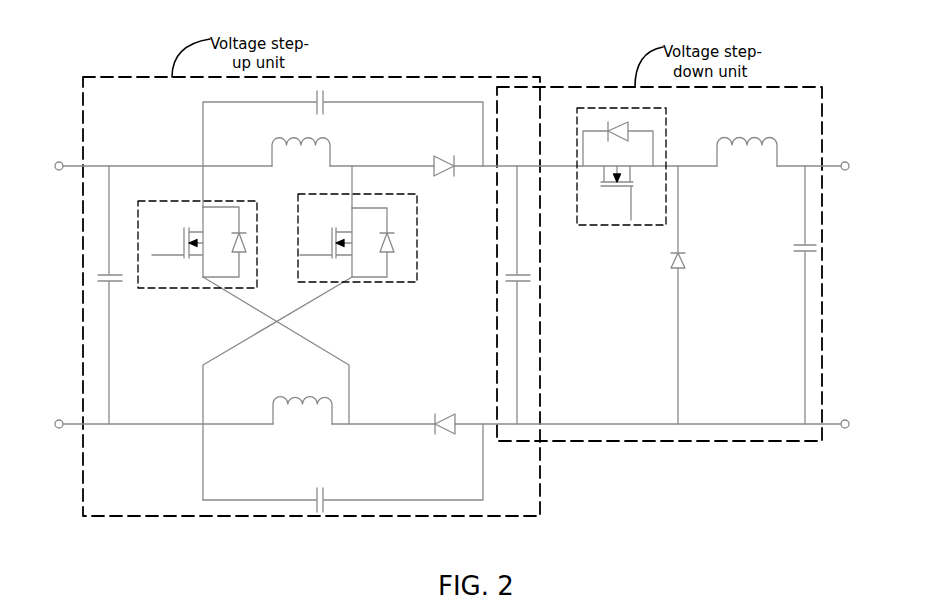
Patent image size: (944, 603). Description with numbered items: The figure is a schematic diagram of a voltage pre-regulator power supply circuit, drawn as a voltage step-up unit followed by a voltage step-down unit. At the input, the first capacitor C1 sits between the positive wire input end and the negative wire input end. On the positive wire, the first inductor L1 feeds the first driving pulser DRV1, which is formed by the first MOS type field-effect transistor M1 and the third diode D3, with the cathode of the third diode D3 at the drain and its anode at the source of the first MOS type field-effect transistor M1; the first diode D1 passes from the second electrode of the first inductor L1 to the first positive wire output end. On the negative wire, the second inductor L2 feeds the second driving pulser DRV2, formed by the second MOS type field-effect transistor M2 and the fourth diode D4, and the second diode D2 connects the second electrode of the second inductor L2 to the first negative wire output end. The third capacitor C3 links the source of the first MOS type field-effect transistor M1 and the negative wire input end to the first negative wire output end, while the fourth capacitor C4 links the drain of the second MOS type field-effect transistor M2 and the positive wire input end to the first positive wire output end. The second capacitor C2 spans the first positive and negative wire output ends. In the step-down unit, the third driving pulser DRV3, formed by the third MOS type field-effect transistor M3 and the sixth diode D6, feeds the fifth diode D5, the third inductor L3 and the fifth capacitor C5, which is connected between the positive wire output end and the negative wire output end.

The first capacitor C1 is at (104, 295).
The second capacitor C2 is at (514, 295).
The third capacitor C3 is at (343, 468).
The fourth capacitor C4 is at (343, 148).
The fifth capacitor C5 is at (792, 295).
The first inductor L1 is at (301, 155).
The second inductor L2 is at (302, 413).
The third inductor L3 is at (747, 155).
The first diode D1 is at (443, 157).
The second diode D2 is at (443, 414).
The third diode D3 is at (382, 242).
The fourth diode D4 is at (224, 242).
The fifth diode D5 is at (665, 295).
The sixth diode D6 is at (618, 144).
The first MOS type field-effect transistor M1 is at (326, 242).
The second MOS type field-effect transistor M2 is at (177, 242).
The third MOS type field-effect transistor M3 is at (615, 193).
The first driving pulser DRV1 is at (357, 248).
The second driving pulser DRV2 is at (197, 252).
The third driving pulser DRV3 is at (621, 159).